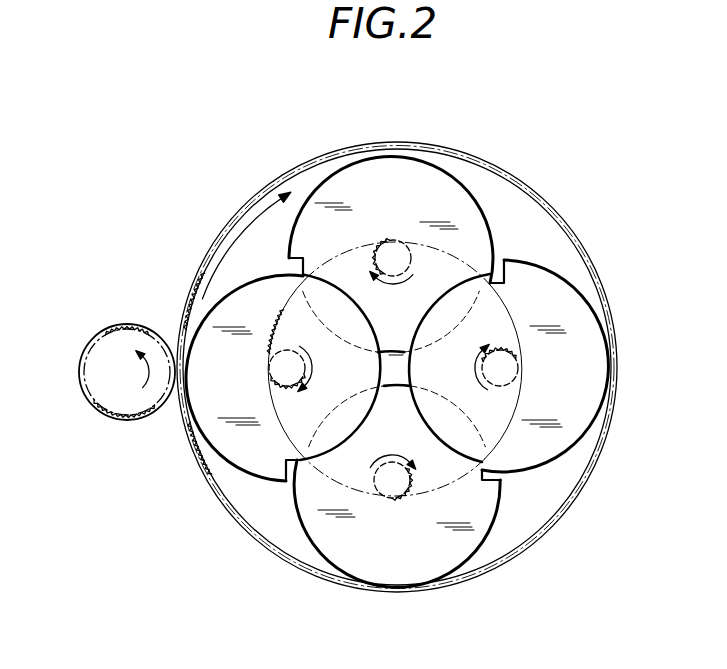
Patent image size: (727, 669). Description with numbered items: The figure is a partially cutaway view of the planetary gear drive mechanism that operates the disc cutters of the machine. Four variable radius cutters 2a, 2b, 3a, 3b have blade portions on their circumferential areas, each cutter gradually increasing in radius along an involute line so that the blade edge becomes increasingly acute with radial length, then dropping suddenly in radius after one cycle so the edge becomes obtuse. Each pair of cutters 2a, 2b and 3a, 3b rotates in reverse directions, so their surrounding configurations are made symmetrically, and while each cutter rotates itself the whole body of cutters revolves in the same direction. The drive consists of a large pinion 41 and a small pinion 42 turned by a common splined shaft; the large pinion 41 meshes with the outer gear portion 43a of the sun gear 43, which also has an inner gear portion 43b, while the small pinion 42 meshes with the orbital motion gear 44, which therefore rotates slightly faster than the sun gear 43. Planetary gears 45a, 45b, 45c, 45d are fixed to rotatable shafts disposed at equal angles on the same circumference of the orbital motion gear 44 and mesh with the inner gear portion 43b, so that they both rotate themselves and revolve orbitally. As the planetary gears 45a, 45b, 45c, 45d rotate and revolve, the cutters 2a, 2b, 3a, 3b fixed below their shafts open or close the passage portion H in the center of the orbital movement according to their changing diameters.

The variable radius cutter 2a is at (207, 416).
The variable radius cutter 2b is at (597, 328).
The variable radius cutter 3a is at (416, 170).
The variable radius cutter 3b is at (392, 573).
The large pinion 41 is at (100, 332).
The small pinion 42 is at (88, 385).
The sun gear 43 is at (272, 193).
The outer gear portion 43a is at (185, 312).
The inner gear portion 43b is at (280, 315).
The orbital motion gear 44 is at (197, 468).
The planetary gear 45a is at (300, 368).
The planetary gear 45b is at (506, 368).
The planetary gear 45c is at (388, 250).
The planetary gear 45d is at (392, 492).
The passage portion H is at (396, 356).